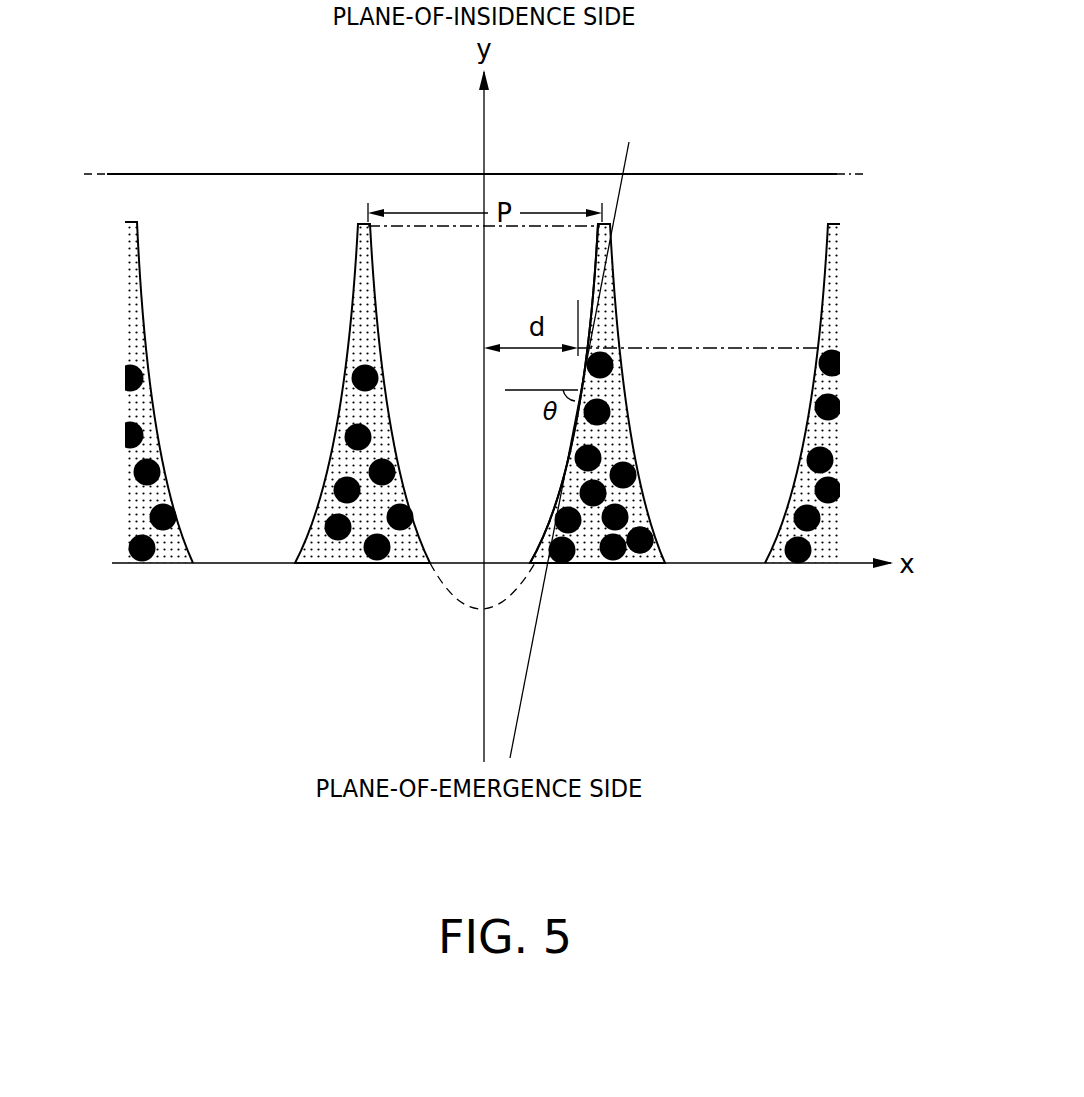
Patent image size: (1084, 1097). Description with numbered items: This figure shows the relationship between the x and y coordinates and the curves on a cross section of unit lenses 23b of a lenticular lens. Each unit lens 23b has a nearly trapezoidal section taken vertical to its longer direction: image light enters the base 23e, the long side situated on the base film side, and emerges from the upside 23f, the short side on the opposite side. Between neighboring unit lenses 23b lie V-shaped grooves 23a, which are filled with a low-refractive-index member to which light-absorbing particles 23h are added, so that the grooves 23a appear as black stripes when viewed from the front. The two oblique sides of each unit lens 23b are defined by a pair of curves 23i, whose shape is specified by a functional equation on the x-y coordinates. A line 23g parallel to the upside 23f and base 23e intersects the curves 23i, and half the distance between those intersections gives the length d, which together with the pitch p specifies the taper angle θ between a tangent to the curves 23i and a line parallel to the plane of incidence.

The V-shaped groove 23a is at (350, 406).
The unit lens 23b is at (577, 272).
The base (long side) of the trapezoidal cross section 23e is at (540, 226).
The upside (short side) of the trapezoidal cross section 23f is at (500, 565).
The line parallel to the upside and base 23g is at (768, 348).
The light absorbing particle 23h is at (642, 553).
The pair of curves 23i is at (431, 563).